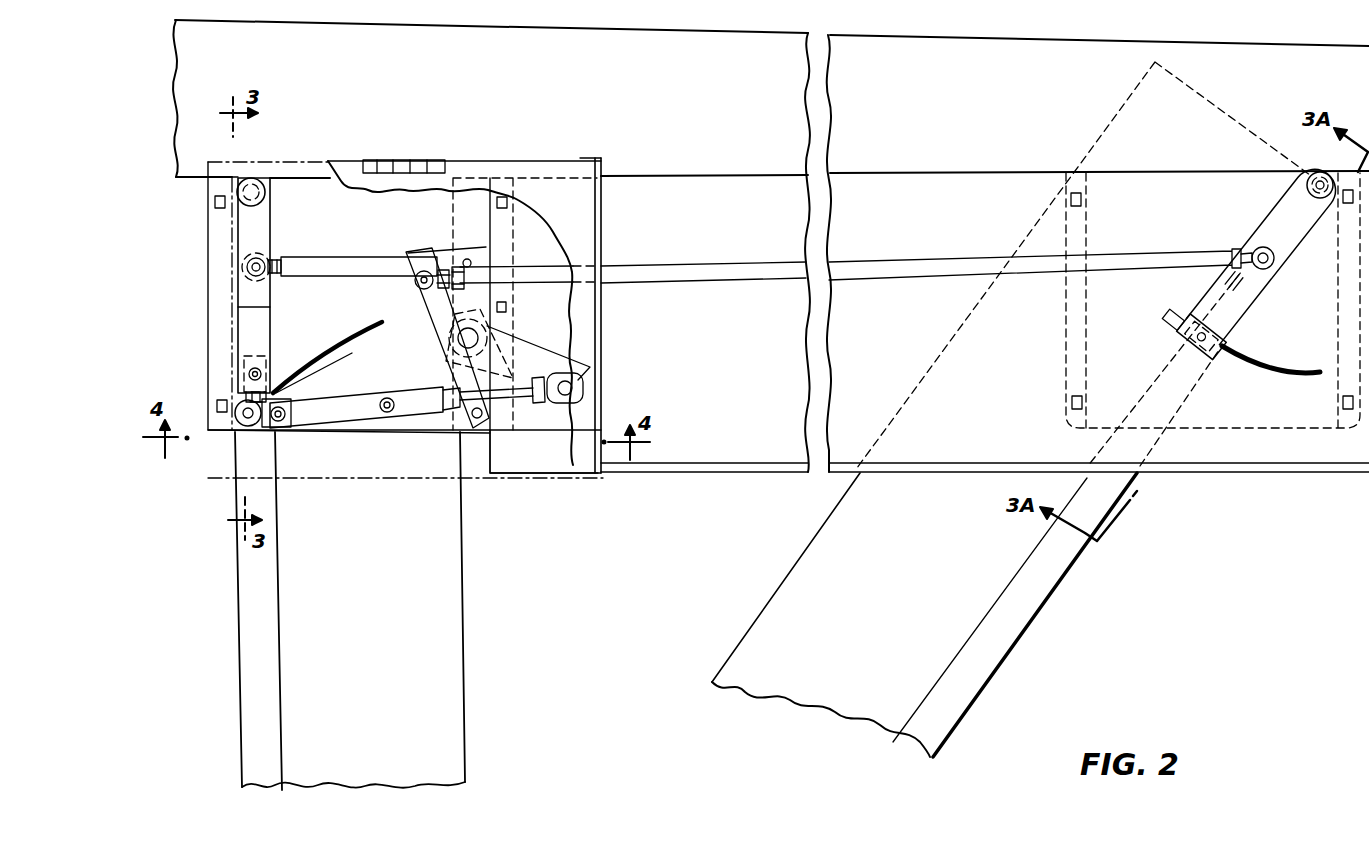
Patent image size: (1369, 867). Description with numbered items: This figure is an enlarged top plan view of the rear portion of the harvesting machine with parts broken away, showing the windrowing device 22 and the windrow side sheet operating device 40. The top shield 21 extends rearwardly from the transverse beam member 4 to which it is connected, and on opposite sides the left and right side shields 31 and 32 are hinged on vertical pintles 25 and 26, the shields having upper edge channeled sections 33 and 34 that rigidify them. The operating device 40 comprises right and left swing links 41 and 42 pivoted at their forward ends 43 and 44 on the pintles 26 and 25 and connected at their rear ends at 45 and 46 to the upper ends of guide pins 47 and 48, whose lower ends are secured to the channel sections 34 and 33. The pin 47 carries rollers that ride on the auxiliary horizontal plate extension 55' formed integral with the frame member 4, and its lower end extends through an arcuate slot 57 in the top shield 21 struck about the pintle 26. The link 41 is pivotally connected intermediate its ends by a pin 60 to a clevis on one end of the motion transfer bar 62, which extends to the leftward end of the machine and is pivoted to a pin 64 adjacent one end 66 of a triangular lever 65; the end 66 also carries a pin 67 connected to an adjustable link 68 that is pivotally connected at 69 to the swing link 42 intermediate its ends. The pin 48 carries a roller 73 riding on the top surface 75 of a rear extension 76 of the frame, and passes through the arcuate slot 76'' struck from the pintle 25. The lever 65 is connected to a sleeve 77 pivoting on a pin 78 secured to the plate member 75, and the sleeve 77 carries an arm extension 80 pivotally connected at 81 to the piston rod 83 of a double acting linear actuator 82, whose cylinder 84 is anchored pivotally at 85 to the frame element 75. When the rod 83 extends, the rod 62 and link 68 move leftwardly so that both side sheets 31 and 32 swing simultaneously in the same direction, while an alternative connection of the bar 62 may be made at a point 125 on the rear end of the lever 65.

The transverse beam member 4 is at (727, 109).
The top shield 21 is at (750, 465).
The windrowing device 22 is at (1248, 463).
The pintle 25 is at (266, 192).
The pintle 26 is at (1307, 188).
The left side shield 31 is at (352, 621).
The right side shield 32 is at (893, 596).
The upper edge channeled section 33 is at (268, 703).
The upper edge channeled section 34 is at (955, 672).
The windrow side sheet operating device 40 is at (889, 260).
The right swing link 41 is at (530, 163).
The left swing link 42 is at (271, 321).
The forward end of right swing link 43 is at (1326, 173).
The forward end of left swing link 44 is at (238, 179).
The rear end connection of right swing link 45 is at (1186, 337).
The rear end connection of left swing link 46 is at (277, 389).
The guide pin 47 is at (1198, 318).
The guide pin 48 is at (263, 371).
The auxiliary horizontal plate extension 55' is at (1187, 283).
The arcuate slot 57 is at (1298, 340).
The pin 60 is at (1254, 249).
The motion transfer bar 62 is at (986, 262).
The pin 64 is at (426, 271).
The triangular lever 65 is at (419, 302).
The end of lever 66 is at (446, 268).
The pin 67 is at (476, 257).
The adjustable link 68 is at (358, 257).
The pivotal connection 69 is at (263, 257).
The roller 73 is at (244, 396).
The top surface of rear extension 75 is at (437, 430).
The rear extension 76 is at (382, 163).
The arcuate slot 76'' is at (327, 357).
The sleeve 77 is at (432, 358).
The pin 78 is at (479, 334).
The arm extension 80 is at (574, 332).
The pivotal connection 81 is at (580, 384).
The linear actuator 82 is at (380, 418).
The piston rod 83 is at (524, 398).
The cylinder 84 is at (343, 418).
The pivotal anchor 85 is at (246, 426).
The point on rear end of lever 125 is at (478, 434).